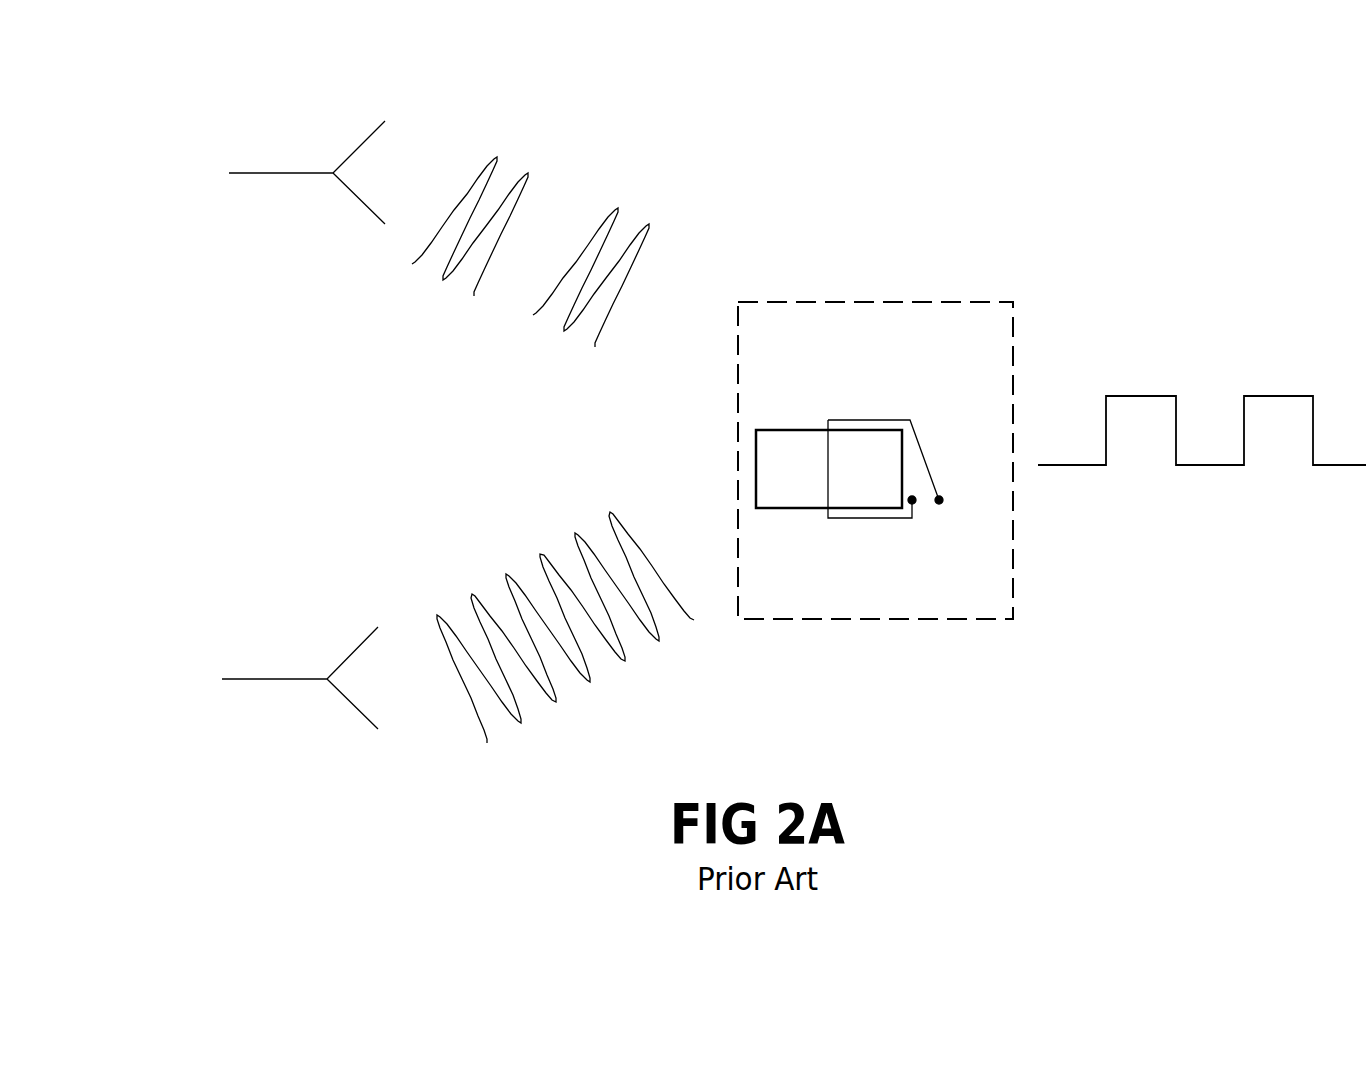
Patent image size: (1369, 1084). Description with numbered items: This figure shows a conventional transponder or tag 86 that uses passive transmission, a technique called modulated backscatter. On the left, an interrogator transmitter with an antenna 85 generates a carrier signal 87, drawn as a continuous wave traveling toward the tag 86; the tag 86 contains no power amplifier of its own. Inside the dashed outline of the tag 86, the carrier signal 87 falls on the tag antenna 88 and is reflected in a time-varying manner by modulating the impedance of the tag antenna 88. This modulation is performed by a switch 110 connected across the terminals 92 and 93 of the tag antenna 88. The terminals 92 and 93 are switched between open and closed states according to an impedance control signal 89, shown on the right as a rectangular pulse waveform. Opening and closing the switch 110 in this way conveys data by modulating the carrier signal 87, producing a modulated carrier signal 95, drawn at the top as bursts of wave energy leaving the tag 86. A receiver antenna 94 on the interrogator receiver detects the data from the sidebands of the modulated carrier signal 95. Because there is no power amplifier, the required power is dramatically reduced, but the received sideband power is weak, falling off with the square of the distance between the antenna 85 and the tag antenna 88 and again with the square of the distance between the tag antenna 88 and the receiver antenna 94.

The receiver antenna 94 is at (299, 148).
The modulated carrier signal 95 is at (600, 150).
The antenna 85 is at (271, 650).
The carrier signal 87 is at (598, 706).
The tag 86 is at (790, 608).
The tag antenna 88 is at (802, 500).
The switch 110 is at (936, 450).
The terminal 92 is at (970, 501).
The terminal 93 is at (929, 522).
The impedance control signal 89 is at (1196, 338).